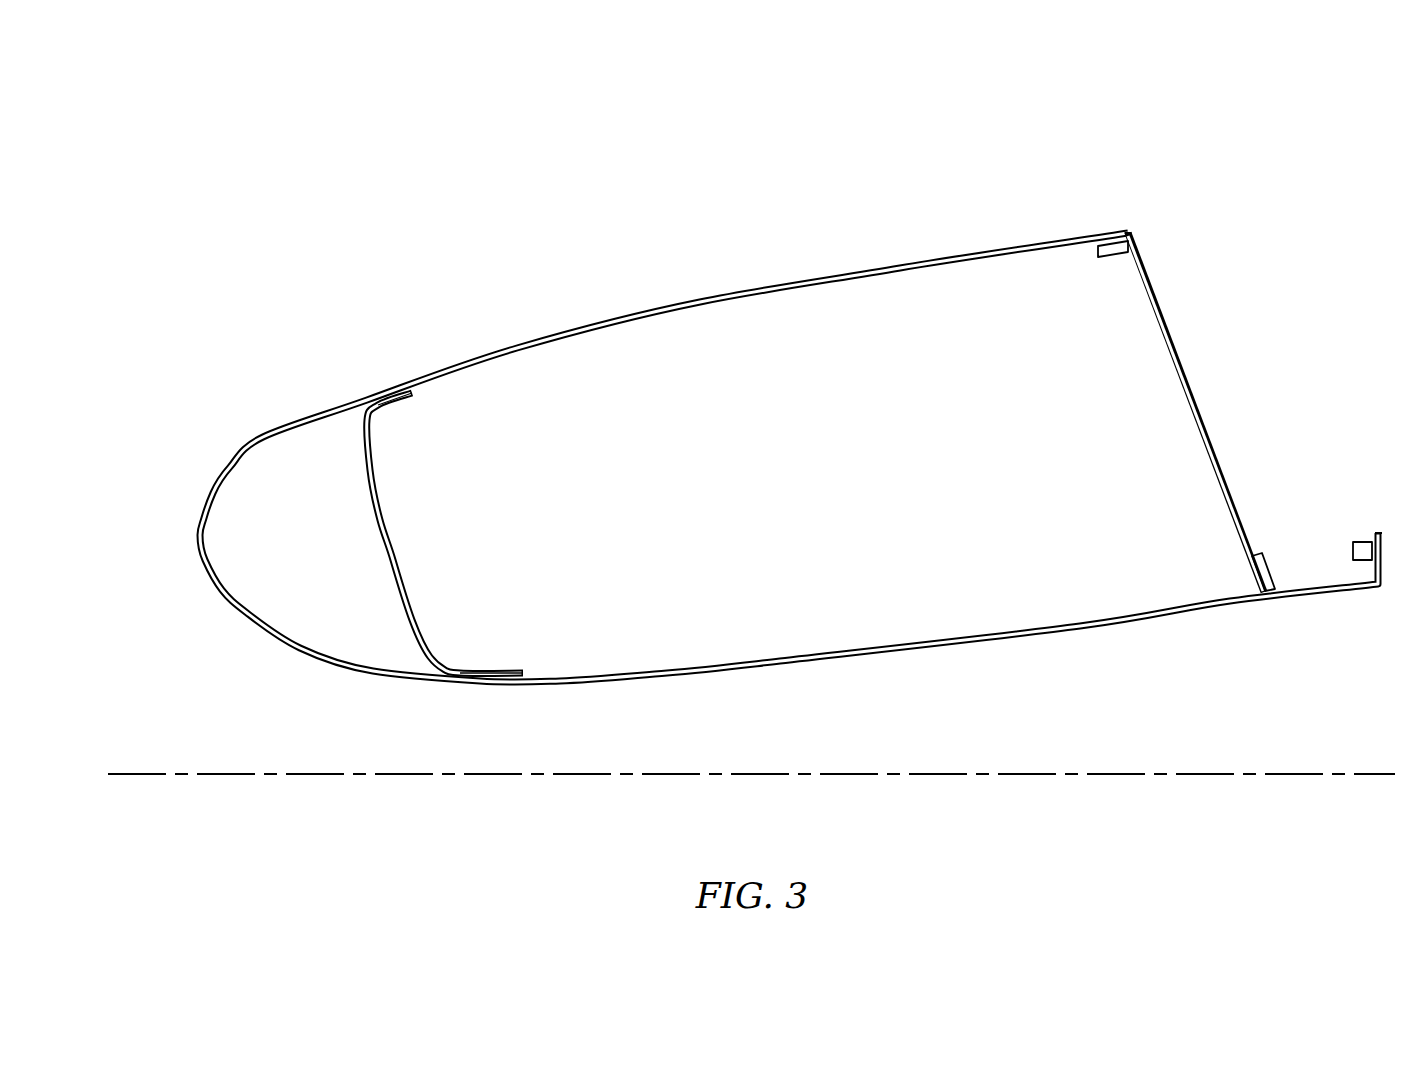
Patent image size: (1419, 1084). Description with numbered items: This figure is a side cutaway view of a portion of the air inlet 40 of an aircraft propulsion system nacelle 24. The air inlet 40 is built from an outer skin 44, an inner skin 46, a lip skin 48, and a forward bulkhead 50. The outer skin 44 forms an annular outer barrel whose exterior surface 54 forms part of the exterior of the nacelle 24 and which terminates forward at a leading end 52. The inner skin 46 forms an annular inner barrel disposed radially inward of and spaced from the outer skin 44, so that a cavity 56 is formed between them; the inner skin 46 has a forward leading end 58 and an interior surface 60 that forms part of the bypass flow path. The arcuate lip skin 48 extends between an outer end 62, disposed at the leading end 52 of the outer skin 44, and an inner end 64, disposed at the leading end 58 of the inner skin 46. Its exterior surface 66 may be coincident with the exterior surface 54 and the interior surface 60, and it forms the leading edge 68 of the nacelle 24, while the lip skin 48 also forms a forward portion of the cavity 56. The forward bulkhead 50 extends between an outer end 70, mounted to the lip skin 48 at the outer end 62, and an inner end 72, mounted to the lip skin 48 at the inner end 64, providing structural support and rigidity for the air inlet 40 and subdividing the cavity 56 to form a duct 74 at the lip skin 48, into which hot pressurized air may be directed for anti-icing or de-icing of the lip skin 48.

The nacelle 24 is at (791, 385).
The air inlet 40 is at (874, 200).
The outer skin 44 is at (637, 310).
The inner skin 46 is at (802, 680).
The lip skin 48 is at (265, 433).
The forward bulkhead 50 is at (385, 603).
The leading end 52 is at (408, 395).
The exterior surface 54 is at (553, 340).
The cavity 56 is at (640, 528).
The leading end 58 is at (513, 690).
The interior surface 60 is at (670, 678).
The outer end 62 is at (393, 392).
The inner end 64 is at (492, 690).
The exterior surface 66 is at (248, 635).
The leading edge 68 is at (197, 538).
The outer end 70 is at (402, 416).
The inner end 72 is at (521, 658).
The duct 74 is at (326, 574).